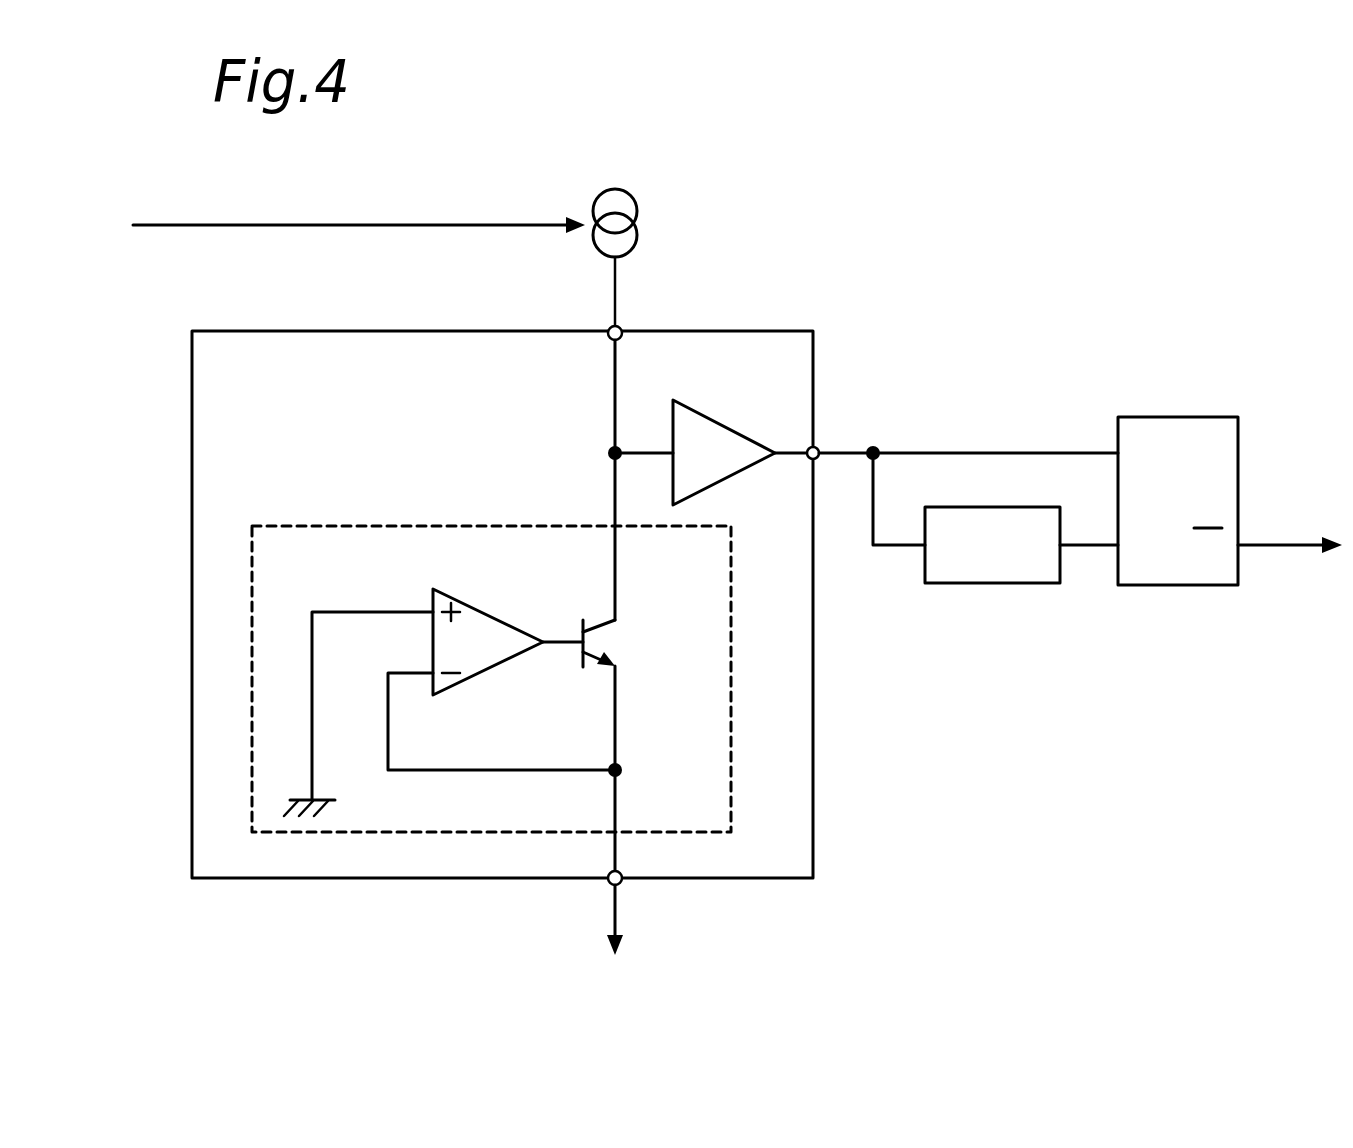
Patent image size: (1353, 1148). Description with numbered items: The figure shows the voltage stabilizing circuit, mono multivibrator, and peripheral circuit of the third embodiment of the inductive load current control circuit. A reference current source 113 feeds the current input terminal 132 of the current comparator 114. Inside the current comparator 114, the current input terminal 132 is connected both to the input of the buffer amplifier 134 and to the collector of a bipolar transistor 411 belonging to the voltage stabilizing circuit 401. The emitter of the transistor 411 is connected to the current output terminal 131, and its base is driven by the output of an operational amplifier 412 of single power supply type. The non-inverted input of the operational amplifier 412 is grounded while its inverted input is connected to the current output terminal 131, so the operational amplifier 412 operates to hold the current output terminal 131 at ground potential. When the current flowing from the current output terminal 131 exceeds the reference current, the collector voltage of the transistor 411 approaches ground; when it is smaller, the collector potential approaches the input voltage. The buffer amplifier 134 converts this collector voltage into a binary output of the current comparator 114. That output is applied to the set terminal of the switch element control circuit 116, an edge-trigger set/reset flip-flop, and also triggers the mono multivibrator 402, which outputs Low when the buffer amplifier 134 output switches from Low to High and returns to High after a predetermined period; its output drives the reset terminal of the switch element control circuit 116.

The reference current source 113 is at (617, 190).
The current comparator 114 is at (192, 468).
The switch element control circuit 116 is at (1178, 416).
The current output terminal 131 is at (606, 886).
The current input terminal 132 is at (609, 327).
The buffer amplifier 134 is at (705, 406).
The voltage stabilizing circuit 401 is at (320, 526).
The mono multivibrator 402 is at (978, 585).
The transistor 411 is at (600, 638).
The operational amplifier 412 is at (491, 617).